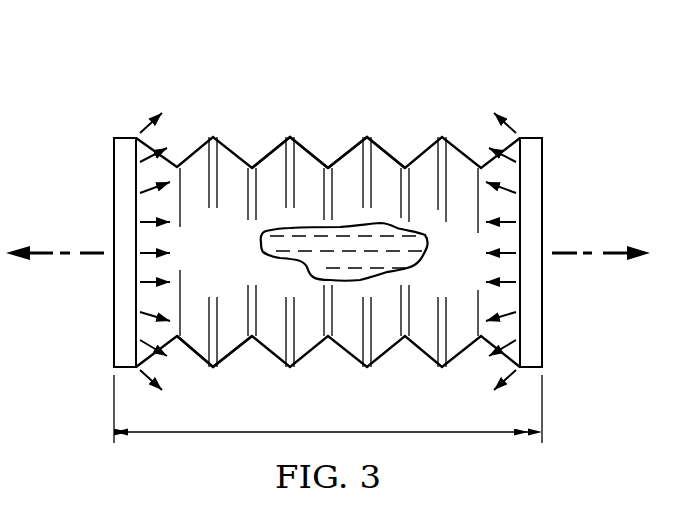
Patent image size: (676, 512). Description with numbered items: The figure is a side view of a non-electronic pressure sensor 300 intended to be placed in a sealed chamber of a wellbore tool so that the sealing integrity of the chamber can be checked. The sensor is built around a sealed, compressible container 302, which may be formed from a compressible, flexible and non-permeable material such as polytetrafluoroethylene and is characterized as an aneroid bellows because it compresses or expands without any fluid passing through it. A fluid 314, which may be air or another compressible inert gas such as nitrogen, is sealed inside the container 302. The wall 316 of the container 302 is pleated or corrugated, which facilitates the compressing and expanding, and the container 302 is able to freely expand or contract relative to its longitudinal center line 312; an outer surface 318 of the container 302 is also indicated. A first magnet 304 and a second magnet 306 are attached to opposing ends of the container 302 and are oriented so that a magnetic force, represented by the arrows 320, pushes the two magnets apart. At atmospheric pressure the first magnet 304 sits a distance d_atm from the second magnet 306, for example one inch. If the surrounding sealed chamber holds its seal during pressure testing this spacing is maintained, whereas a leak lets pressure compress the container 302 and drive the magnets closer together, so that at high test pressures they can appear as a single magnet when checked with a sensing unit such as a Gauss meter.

The non-electronic pressure sensor 300 is at (442, 65).
The sealed, compressible container 302 is at (290, 133).
The first magnet 304 is at (114, 200).
The second magnet 306 is at (542, 200).
The longitudinal center line 312 is at (615, 258).
The fluid 314 is at (262, 245).
The wall 316 is at (367, 135).
The outer surface 318 is at (237, 339).
The arrows 320 is at (140, 130).